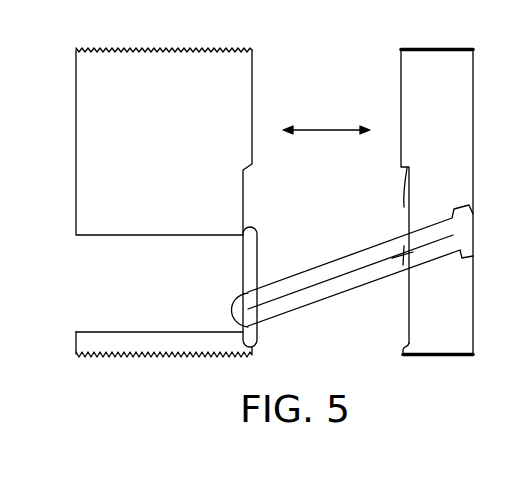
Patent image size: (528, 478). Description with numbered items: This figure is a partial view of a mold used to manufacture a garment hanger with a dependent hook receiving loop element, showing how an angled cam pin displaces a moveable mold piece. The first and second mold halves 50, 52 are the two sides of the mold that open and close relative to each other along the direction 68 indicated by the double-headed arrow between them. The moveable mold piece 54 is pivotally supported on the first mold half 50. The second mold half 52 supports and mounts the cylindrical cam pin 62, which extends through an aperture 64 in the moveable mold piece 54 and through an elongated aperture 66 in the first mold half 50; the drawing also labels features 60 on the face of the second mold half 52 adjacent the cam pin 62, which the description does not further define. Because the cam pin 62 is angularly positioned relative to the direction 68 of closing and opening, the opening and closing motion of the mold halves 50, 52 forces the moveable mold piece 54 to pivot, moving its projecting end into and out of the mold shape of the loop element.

The first mold half 50 is at (166, 149).
The second mold half 52 is at (452, 145).
The moveable mold piece 54 is at (258, 261).
The mounting pads 60 is at (404, 207).
The cam pin 62 is at (343, 258).
The aperture 64 is at (250, 329).
The elongated aperture 66 is at (181, 236).
The direction of closing and opening 68 is at (331, 129).